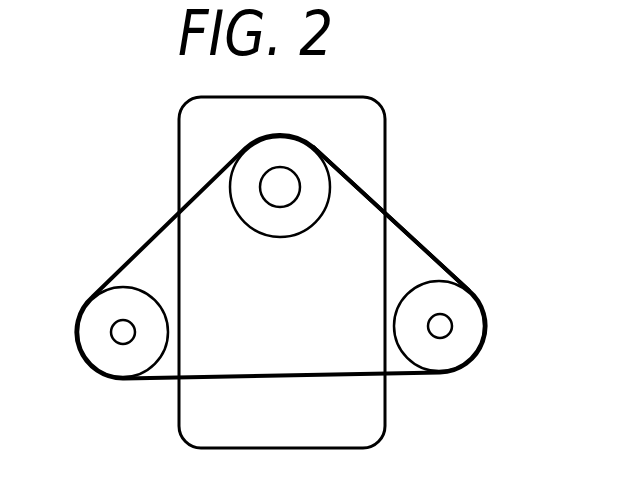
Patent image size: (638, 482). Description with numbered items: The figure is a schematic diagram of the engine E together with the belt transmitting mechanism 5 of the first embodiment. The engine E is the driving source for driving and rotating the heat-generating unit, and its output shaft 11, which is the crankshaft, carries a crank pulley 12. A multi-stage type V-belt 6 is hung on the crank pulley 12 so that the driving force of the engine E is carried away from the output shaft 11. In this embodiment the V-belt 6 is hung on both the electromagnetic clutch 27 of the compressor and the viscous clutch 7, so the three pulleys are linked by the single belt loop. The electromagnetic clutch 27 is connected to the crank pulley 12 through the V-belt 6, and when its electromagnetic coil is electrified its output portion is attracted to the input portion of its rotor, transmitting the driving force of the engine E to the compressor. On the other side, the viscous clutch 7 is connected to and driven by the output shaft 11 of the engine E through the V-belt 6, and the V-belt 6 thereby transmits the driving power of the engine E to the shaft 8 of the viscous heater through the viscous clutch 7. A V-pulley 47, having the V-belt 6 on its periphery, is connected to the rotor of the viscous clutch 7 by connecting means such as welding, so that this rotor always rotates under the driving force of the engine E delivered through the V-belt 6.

The engine E is at (385, 127).
The belt transmitting mechanism 5 is at (511, 178).
The V-belt 6 is at (430, 250).
The viscous clutch 7 is at (468, 293).
The shaft 8 is at (443, 323).
The output shaft 11 is at (270, 180).
The crank pulley 12 is at (260, 149).
The electromagnetic clutch 27 is at (112, 355).
The V-pulley 47 is at (430, 358).